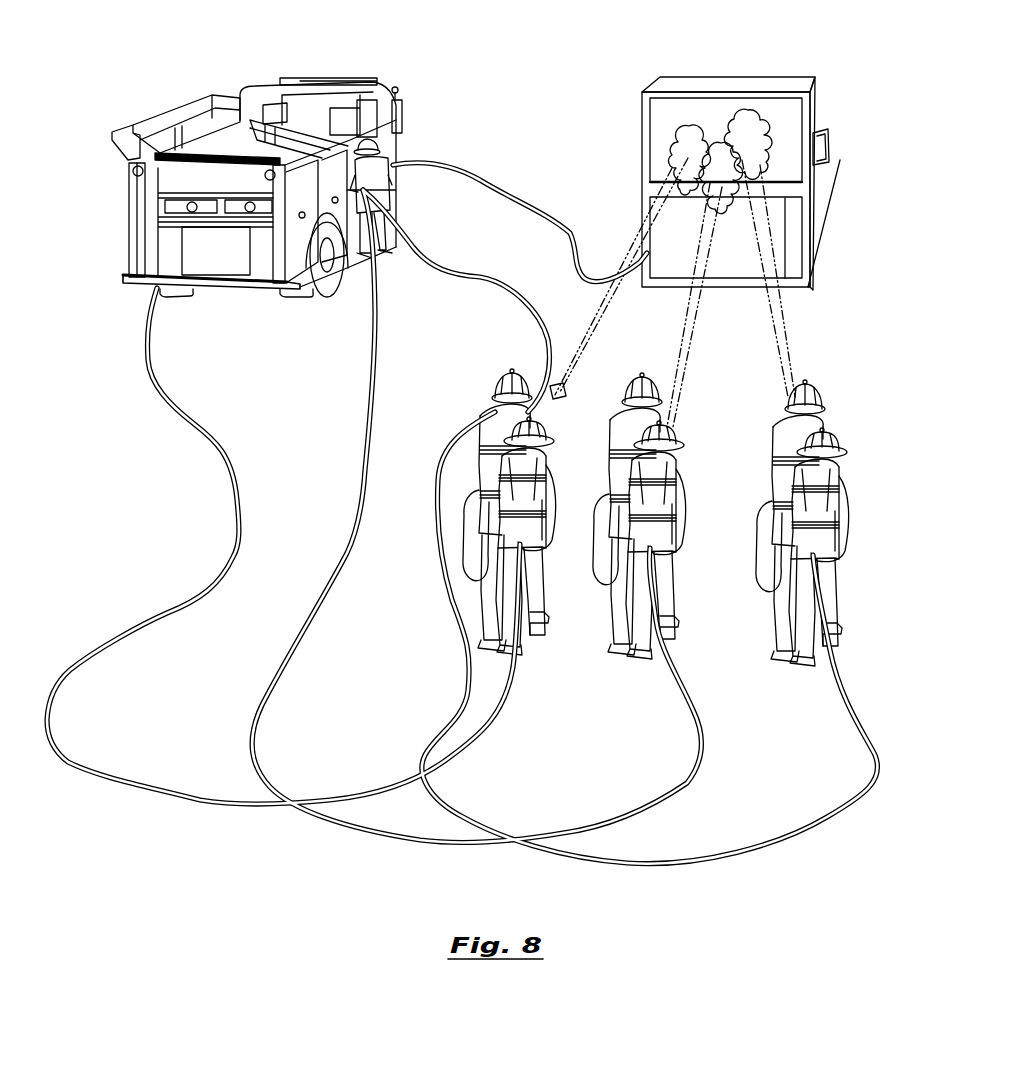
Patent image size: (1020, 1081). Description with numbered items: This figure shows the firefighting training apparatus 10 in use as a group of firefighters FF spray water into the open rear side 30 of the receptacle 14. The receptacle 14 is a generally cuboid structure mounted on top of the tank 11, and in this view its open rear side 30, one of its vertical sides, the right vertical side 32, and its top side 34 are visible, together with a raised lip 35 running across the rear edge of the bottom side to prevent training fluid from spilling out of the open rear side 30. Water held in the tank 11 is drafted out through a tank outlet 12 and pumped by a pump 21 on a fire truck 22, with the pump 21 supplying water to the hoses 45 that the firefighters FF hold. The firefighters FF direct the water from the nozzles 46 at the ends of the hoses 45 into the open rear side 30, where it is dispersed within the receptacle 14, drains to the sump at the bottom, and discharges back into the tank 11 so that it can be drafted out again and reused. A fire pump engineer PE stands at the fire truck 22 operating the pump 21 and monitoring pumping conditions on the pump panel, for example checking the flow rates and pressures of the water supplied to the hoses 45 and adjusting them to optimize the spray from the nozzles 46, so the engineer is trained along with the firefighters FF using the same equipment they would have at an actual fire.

The firefighting training apparatus 10 is at (679, 148).
The tank 11 is at (827, 167).
The tank outlets 12 is at (647, 266).
The receptacle 14 is at (713, 148).
The pump 21 is at (257, 115).
The fire truck 22 is at (302, 90).
The open rear side 30 is at (658, 127).
The right vertical side 32 is at (812, 100).
The top side 34 is at (748, 82).
The raised lip 35 is at (773, 190).
The hoses 45 is at (507, 717).
The nozzles 46 is at (532, 414).
The firefighters FF is at (620, 427).
The fire pump engineer PE is at (370, 180).